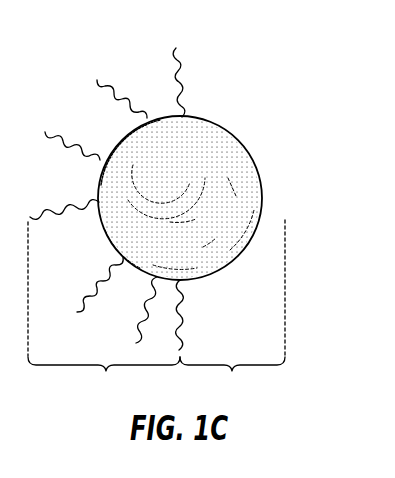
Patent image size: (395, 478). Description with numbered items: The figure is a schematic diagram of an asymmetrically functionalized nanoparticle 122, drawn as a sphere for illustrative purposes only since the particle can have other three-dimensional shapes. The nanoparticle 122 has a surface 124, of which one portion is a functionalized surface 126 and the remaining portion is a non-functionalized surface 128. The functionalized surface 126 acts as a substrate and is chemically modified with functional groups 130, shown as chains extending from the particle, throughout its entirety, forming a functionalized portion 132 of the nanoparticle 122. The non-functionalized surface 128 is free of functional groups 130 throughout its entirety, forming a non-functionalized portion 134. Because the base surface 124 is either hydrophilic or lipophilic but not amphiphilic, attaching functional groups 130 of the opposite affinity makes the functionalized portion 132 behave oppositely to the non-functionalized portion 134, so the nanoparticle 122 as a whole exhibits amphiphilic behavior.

The asymmetrically functionalized nanoparticle 122 is at (207, 60).
The surface 124 is at (214, 122).
The functionalized surface 126 is at (98, 190).
The non-functionalized surface 128 is at (261, 176).
The functional groups 130 is at (97, 80).
The functionalized portion 132 is at (104, 315).
The non-functionalized portion 134 is at (232, 314).